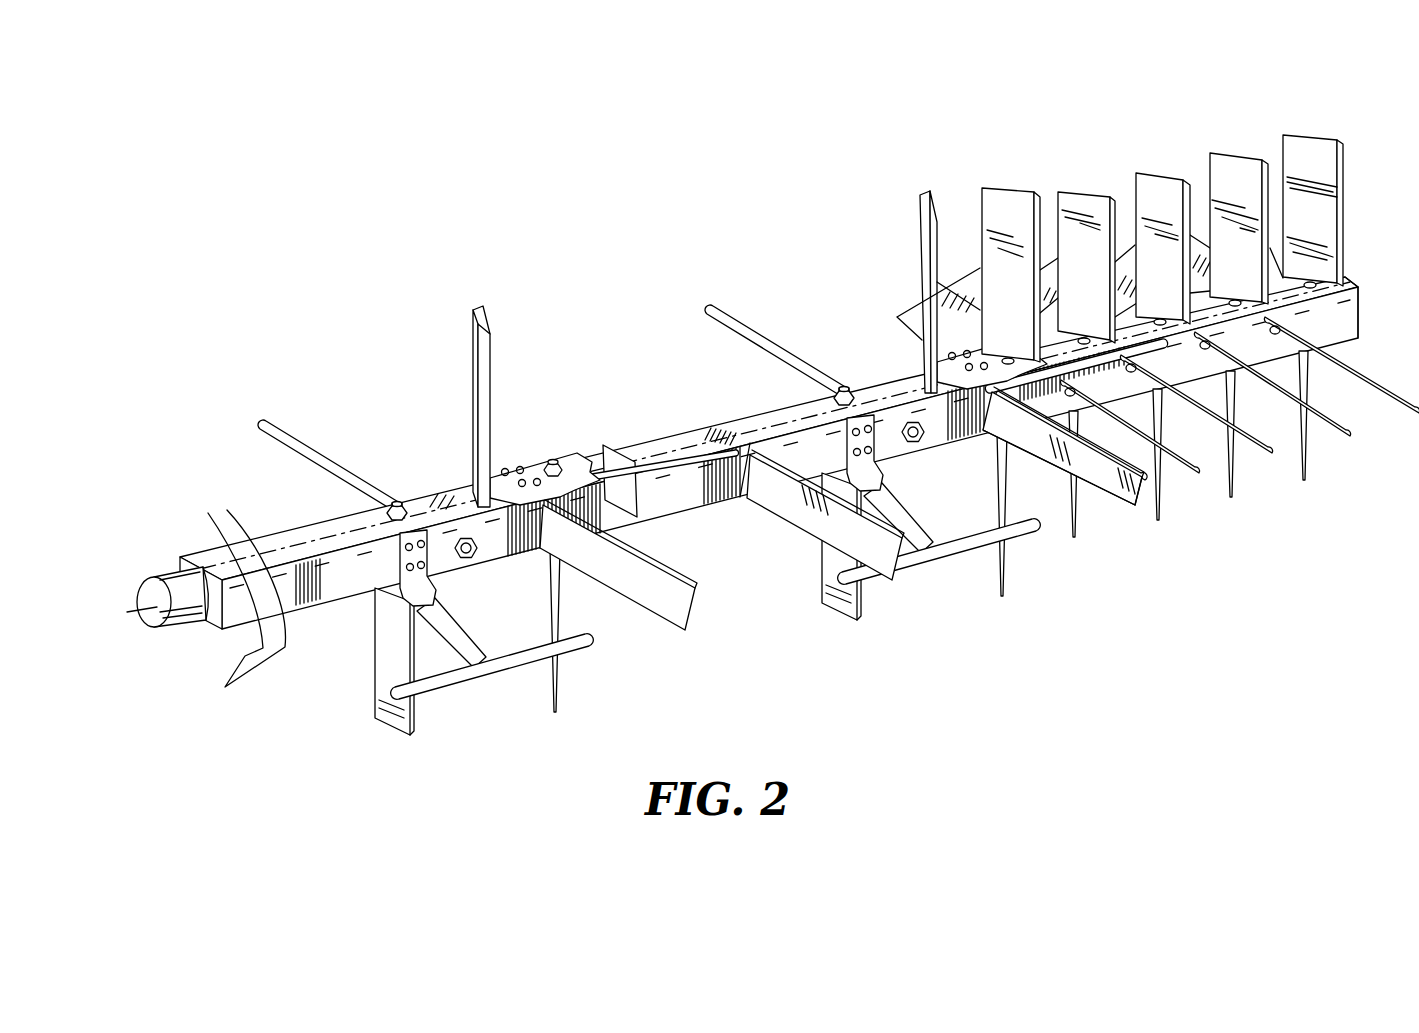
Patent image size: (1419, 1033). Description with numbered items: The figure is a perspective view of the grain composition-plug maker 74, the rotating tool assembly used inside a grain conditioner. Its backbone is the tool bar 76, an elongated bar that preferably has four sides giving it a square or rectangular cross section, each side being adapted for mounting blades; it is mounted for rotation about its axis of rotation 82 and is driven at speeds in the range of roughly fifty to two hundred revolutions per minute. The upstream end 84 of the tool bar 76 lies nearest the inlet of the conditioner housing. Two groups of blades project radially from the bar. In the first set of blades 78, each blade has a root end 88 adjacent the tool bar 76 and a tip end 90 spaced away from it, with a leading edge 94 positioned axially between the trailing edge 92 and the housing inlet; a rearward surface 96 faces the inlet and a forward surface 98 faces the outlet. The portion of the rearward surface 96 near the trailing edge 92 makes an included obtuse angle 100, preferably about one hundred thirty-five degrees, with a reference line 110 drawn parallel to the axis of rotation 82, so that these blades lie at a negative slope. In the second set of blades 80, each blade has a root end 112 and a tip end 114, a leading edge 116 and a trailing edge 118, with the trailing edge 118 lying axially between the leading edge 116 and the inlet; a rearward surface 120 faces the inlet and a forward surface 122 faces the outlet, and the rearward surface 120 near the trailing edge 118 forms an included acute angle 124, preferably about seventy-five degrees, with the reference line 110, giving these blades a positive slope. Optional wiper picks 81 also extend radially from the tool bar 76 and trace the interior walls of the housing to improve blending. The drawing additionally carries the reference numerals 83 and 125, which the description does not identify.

The grain composition-plug maker 74 is at (510, 234).
The tool bar 76 is at (315, 530).
The first set of blades 78 is at (1320, 488).
The second set of blades 80 is at (690, 662).
The wiper picks 81 is at (977, 555).
The axis of rotation 82 is at (152, 608).
The shaft keyway 83 is at (216, 629).
The upstream end 84 is at (1367, 318).
The root end 88 is at (978, 408).
The tip end 90 is at (1135, 512).
The trailing edge 92 is at (983, 203).
The leading edge 94 is at (1343, 172).
The rearward surface 96 is at (1030, 188).
The forward surface 98 is at (1007, 210).
The included obtuse angle 100 is at (1005, 332).
The reference line 110 is at (295, 537).
The root end 112 is at (526, 522).
The tip end 114 is at (700, 608).
The leading edge 116 is at (490, 390).
The trailing edge 118 is at (474, 334).
The rearward surface 120 is at (488, 328).
The forward surface 122 is at (477, 420).
The included acute angle 124 is at (503, 473).
The tine assembly 125 is at (1128, 778).